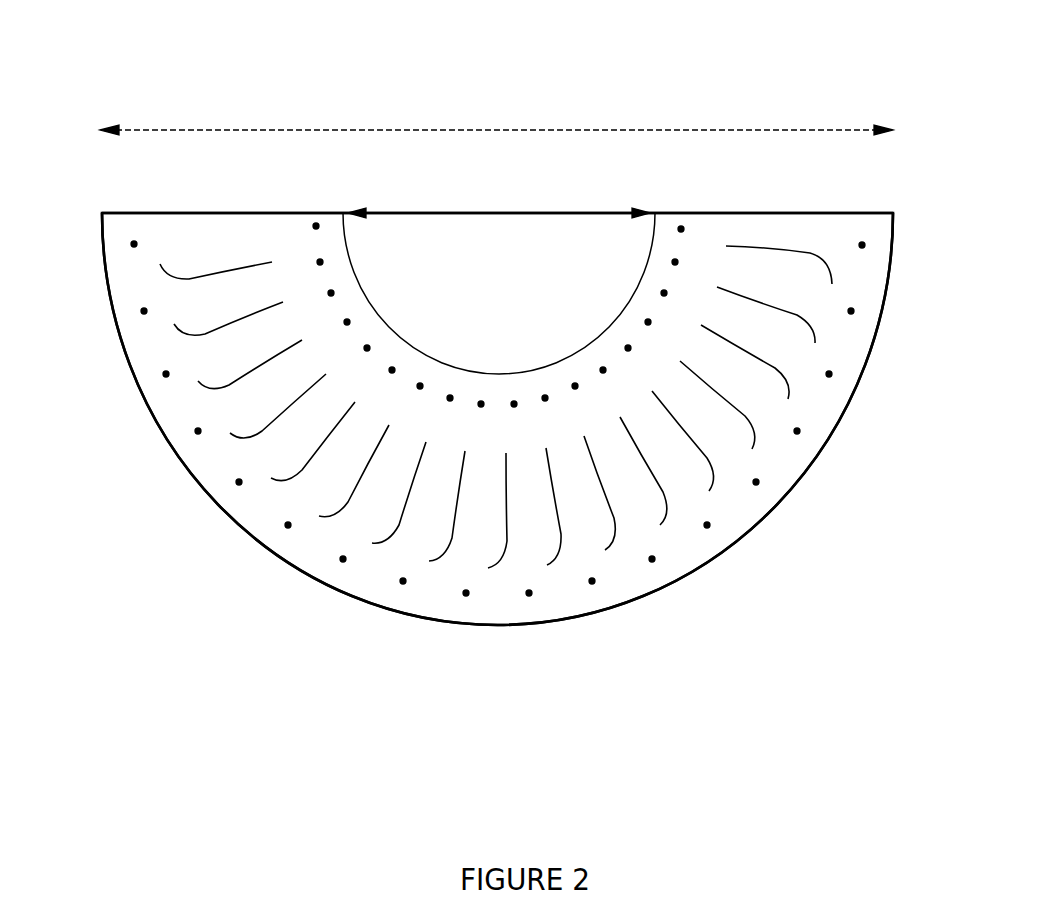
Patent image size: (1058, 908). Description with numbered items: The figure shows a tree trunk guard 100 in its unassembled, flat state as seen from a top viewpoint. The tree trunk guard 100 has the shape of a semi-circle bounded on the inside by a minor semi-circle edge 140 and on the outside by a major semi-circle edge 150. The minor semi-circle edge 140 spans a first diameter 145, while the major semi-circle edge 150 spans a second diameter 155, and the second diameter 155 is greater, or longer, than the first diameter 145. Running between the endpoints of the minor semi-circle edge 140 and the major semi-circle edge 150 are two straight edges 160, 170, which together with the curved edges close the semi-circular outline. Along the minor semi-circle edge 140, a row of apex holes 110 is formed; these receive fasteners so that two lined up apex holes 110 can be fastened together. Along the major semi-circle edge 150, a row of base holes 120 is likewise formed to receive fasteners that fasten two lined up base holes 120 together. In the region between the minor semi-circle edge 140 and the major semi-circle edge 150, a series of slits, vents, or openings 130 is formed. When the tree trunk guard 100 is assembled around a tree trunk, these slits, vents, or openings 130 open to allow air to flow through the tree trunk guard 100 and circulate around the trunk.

The tree trunk guard 100 is at (527, 47).
The apex holes 110 is at (320, 222).
The base holes 120 is at (865, 244).
The slits, vents, or openings 130 is at (833, 277).
The minor semi-circle edge 140 is at (413, 347).
The first diameter 145 is at (478, 213).
The major semi-circle edge 150 is at (781, 496).
The second diameter 155 is at (503, 129).
The edge 160 is at (802, 208).
The edge 170 is at (257, 212).